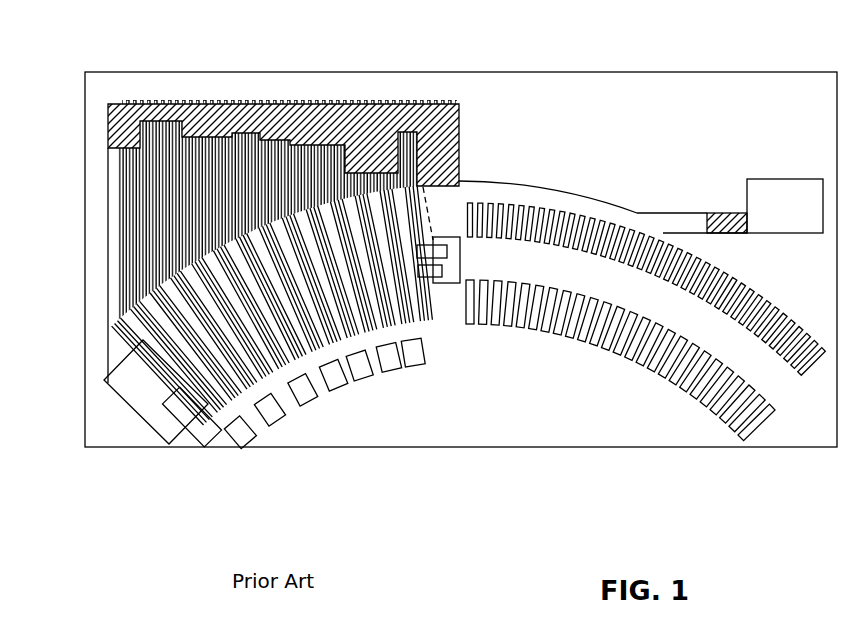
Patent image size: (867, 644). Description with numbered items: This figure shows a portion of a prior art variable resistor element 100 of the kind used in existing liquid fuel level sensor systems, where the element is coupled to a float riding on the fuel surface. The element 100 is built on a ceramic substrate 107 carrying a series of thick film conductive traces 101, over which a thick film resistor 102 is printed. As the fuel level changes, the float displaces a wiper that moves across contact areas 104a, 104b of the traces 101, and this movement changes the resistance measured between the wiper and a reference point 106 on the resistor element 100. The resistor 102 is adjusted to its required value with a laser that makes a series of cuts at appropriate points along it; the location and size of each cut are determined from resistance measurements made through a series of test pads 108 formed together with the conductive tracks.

The variable resistor element 100 is at (436, 235).
The conductive traces 101 is at (138, 240).
The thick film resistor 102 is at (355, 140).
The contact area 104a is at (130, 350).
The contact area 104b is at (193, 430).
The reference point 106 is at (771, 222).
The ceramic substrate 107 is at (637, 418).
The test pads 108 is at (416, 356).